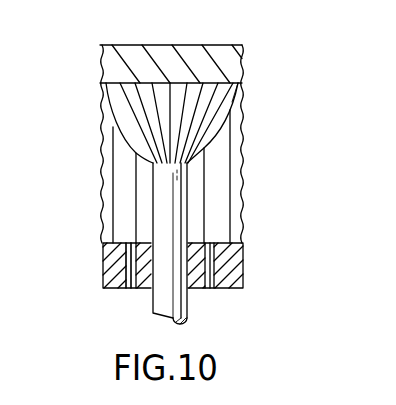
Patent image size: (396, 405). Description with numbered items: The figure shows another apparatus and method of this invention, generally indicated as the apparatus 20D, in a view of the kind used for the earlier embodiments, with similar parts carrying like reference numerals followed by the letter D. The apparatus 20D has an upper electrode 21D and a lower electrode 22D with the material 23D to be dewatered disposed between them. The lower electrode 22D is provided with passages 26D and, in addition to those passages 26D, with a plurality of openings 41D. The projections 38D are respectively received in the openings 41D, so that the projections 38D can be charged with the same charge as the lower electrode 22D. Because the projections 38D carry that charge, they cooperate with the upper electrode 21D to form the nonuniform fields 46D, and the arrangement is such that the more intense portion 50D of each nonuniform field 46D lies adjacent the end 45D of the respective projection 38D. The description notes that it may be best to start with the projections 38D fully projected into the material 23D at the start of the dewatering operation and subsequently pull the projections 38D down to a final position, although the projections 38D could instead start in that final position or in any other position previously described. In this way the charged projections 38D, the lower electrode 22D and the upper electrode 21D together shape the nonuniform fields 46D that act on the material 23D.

The apparatus 20D is at (277, 67).
The upper electrode 21D is at (126, 52).
The lower electrode 22D is at (230, 256).
The material 23D is at (237, 198).
The passages 26D is at (112, 255).
The projections 38D is at (162, 205).
The openings 41D is at (189, 272).
The end 45D is at (180, 160).
The nonuniform field 46D is at (116, 96).
The more intense portion 50D is at (135, 148).